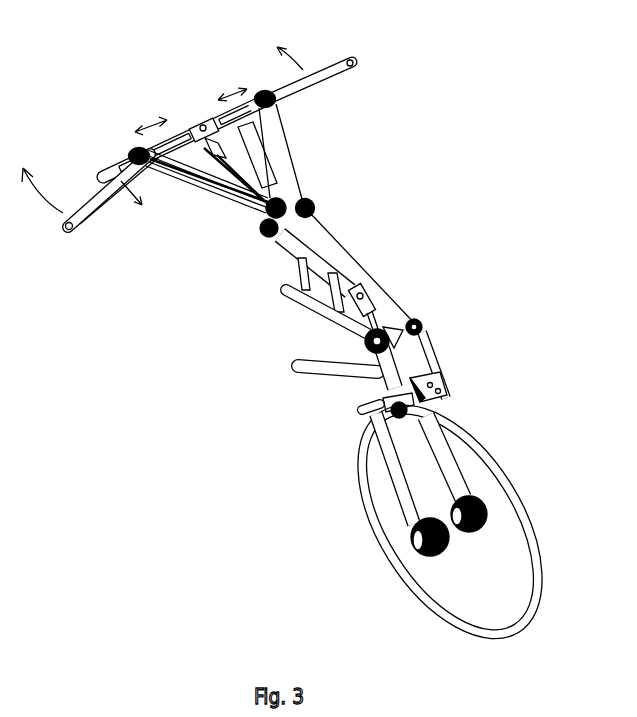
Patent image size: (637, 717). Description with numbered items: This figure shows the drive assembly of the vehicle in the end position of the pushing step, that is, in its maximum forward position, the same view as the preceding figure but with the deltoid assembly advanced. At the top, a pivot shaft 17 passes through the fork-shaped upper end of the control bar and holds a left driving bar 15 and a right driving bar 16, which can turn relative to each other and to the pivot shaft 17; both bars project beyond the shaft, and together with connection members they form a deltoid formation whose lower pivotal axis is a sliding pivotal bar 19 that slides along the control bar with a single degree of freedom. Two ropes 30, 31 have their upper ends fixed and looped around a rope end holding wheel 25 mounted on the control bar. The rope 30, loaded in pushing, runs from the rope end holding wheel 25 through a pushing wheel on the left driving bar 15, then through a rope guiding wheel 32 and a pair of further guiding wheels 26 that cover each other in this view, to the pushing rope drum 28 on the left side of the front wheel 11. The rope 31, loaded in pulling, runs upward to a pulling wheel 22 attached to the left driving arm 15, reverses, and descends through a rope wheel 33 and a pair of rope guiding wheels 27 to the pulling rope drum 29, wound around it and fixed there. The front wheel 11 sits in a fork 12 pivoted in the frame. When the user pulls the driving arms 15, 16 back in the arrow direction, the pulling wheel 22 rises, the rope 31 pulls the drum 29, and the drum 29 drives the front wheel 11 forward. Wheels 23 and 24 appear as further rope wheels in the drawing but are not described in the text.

The front wheel 11 is at (508, 490).
The fork 12 is at (447, 408).
The left driving bar 15 is at (334, 70).
The right driving bar 16 is at (85, 223).
The pivot shaft 17 is at (203, 120).
The sliding pivotal bar 19 is at (252, 177).
The pulling wheel 22 is at (261, 90).
The pulley 23 is at (264, 236).
The pulley 24 is at (316, 207).
The rope end holding wheel 25 is at (262, 212).
The rope guiding wheel 26 is at (373, 414).
The rope guiding wheel 27 is at (440, 387).
The pushing rope drum 28 is at (422, 553).
The pulling rope drum 29 is at (478, 500).
The rope 30 is at (295, 268).
The rope 31 is at (363, 293).
The rope guiding wheel 32 is at (367, 345).
The rope wheel 33 is at (414, 318).